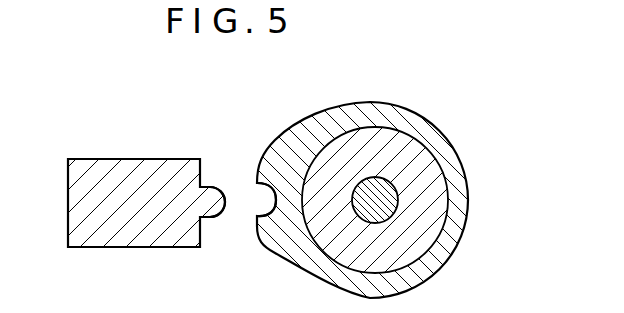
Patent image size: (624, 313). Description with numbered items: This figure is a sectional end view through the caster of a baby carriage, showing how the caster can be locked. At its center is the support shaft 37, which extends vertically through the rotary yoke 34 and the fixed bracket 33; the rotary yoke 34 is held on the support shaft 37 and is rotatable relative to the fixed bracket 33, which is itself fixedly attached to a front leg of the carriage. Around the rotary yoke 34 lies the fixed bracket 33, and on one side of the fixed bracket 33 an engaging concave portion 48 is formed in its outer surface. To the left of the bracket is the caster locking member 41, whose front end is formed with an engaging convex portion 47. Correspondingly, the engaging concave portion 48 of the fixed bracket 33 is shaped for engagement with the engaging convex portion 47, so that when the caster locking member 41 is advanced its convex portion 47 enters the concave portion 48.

The fixed bracket 33 is at (357, 111).
The rotary yoke 34 is at (383, 253).
The support shaft 37 is at (385, 187).
The caster locking member 41 is at (77, 137).
The engaging convex portion 47 is at (213, 187).
The engaging concave portion 48 is at (262, 200).